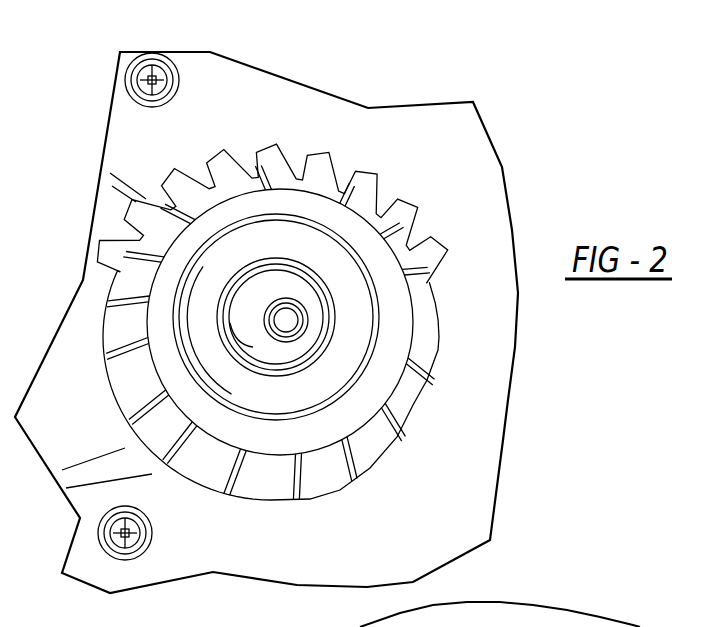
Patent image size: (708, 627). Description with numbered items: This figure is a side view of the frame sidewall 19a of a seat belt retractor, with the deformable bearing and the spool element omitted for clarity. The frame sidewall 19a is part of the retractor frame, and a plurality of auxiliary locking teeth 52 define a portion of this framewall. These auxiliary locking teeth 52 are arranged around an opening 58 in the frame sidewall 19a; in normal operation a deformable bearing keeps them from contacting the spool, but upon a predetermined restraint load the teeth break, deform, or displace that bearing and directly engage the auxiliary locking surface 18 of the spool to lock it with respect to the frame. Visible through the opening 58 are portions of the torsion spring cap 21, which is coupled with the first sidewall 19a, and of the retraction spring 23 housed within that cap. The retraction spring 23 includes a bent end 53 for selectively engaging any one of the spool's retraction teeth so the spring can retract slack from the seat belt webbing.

The first framewall 19a is at (217, 98).
The torsion spring cap 21 is at (172, 444).
The auxiliary locking teeth 52 is at (296, 167).
The bent end 53 is at (258, 280).
The opening 58 is at (402, 412).
The retraction spring 23 is at (297, 350).
The auxiliary locking surface 18 is at (650, 626).